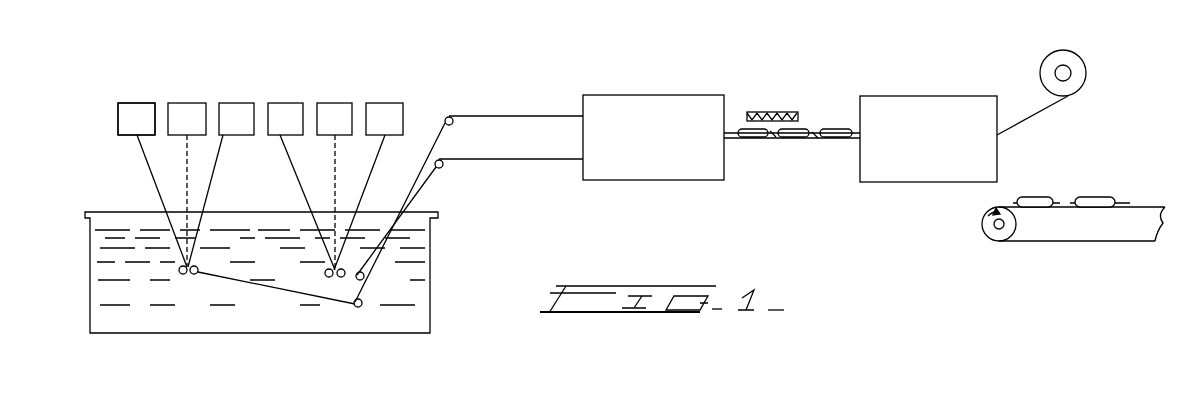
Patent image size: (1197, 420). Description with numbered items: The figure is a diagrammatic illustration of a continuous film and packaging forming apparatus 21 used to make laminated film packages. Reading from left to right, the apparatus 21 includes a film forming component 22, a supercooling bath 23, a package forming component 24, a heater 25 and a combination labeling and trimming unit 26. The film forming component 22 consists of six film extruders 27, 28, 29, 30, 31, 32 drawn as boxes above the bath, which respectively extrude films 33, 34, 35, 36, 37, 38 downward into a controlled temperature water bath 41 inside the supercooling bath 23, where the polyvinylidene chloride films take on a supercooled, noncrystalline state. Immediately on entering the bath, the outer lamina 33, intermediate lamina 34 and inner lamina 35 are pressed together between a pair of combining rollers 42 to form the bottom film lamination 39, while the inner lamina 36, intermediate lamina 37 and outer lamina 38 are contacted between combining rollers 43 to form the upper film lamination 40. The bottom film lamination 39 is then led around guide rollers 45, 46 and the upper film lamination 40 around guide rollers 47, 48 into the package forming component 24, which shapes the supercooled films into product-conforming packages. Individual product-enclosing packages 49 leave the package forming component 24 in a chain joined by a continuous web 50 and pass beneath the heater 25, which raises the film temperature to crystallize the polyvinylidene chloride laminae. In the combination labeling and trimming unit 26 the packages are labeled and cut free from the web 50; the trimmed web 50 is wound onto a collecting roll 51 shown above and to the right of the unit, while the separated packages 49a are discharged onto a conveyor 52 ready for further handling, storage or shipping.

The continuous film and packaging forming apparatus 21 is at (553, 96).
The film forming component 22 is at (118, 120).
The supercooling bath 23 is at (90, 278).
The package forming component 24 is at (653, 180).
The heater 25 is at (770, 112).
The combination labeling and trimming unit 26 is at (912, 96).
The film extruder 27 is at (134, 109).
The film extruder 28 is at (187, 109).
The film extruder 29 is at (236, 109).
The film extruder 30 is at (287, 109).
The film extruder 31 is at (334, 109).
The film extruder 32 is at (386, 109).
The outer lamina 33 is at (150, 179).
The intermediate lamina 34 is at (184, 175).
The inner lamina 35 is at (233, 178).
The inner lamina 36 is at (292, 171).
The intermediate lamina 37 is at (336, 178).
The outer lamina 38 is at (373, 191).
The bottom film lamination 39 is at (310, 301).
The upper film lamination 40 is at (507, 115).
The water bath 41 is at (274, 327).
The combining rollers 42 is at (180, 273).
The combining rollers 43 is at (325, 274).
The guide roller 45 is at (362, 304).
The guide roller 46 is at (443, 166).
The guide roller 47 is at (364, 277).
The guide roller 48 is at (453, 122).
The product-enclosing packages 49 is at (798, 130).
The separated packages 49a is at (1043, 197).
The continuous web 50 is at (774, 139).
The collecting roll 51 is at (1085, 72).
The conveyor 52 is at (1066, 242).